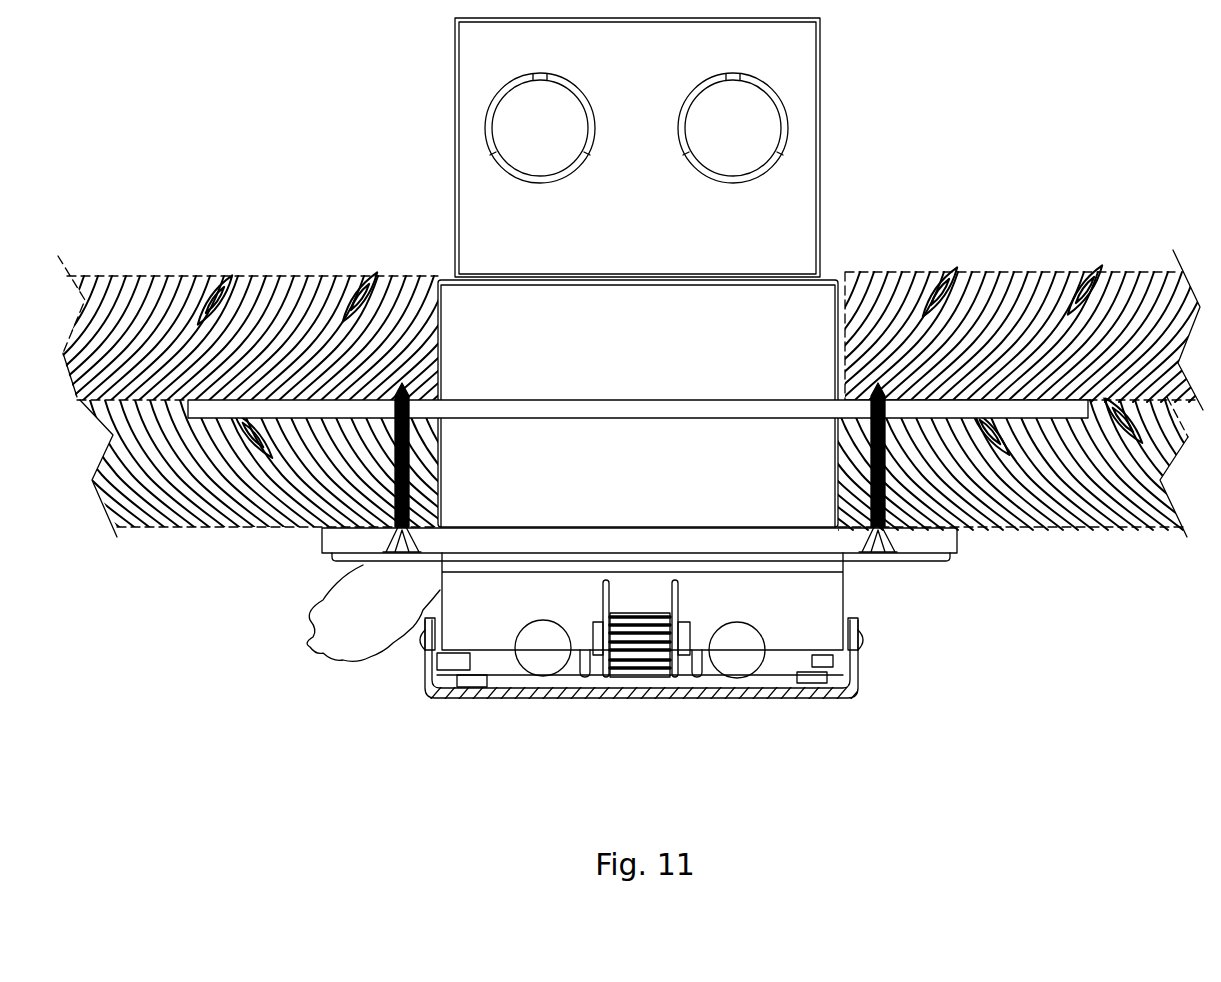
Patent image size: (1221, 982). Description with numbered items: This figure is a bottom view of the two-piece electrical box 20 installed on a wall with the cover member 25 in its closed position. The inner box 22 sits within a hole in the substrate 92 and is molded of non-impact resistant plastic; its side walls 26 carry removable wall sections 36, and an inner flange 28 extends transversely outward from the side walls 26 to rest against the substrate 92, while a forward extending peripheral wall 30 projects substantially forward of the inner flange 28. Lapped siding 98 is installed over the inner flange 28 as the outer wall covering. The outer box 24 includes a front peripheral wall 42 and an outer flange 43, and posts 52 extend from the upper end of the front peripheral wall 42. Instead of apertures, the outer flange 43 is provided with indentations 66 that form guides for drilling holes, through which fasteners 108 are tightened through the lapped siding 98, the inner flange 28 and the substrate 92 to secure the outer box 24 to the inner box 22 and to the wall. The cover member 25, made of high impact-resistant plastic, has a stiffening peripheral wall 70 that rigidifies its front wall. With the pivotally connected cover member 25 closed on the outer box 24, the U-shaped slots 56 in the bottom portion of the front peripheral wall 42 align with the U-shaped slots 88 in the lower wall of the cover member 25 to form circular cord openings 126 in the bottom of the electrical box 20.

The electrical box 20 is at (895, 195).
The inner box 22 is at (820, 97).
The outer box 24 is at (847, 699).
The cover member 25 is at (496, 691).
The side walls 26 is at (629, 195).
The inner flange 28 is at (1040, 407).
The forward extending peripheral wall 30 is at (632, 481).
The removable wall sections 36 is at (537, 132).
The front peripheral wall 42 is at (559, 611).
The outer flange 43 is at (342, 540).
The posts 52 is at (868, 638).
The U-shaped slots 56 is at (543, 620).
The indentations 66 is at (405, 563).
The stiffening peripheral wall 70 is at (858, 667).
The U-shaped slots 88 is at (541, 680).
The substrate 92 is at (270, 330).
The lapped siding 98 is at (210, 497).
The fasteners 108 is at (410, 457).
The circular cord openings 126 is at (543, 645).